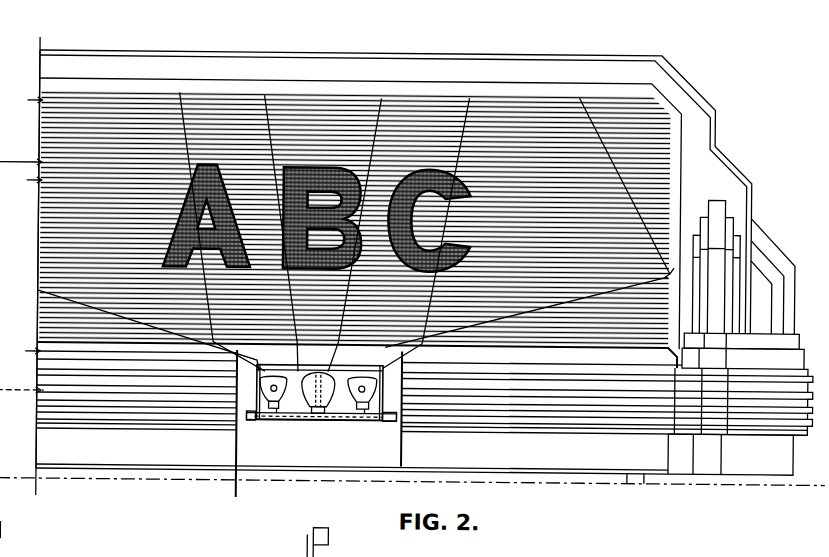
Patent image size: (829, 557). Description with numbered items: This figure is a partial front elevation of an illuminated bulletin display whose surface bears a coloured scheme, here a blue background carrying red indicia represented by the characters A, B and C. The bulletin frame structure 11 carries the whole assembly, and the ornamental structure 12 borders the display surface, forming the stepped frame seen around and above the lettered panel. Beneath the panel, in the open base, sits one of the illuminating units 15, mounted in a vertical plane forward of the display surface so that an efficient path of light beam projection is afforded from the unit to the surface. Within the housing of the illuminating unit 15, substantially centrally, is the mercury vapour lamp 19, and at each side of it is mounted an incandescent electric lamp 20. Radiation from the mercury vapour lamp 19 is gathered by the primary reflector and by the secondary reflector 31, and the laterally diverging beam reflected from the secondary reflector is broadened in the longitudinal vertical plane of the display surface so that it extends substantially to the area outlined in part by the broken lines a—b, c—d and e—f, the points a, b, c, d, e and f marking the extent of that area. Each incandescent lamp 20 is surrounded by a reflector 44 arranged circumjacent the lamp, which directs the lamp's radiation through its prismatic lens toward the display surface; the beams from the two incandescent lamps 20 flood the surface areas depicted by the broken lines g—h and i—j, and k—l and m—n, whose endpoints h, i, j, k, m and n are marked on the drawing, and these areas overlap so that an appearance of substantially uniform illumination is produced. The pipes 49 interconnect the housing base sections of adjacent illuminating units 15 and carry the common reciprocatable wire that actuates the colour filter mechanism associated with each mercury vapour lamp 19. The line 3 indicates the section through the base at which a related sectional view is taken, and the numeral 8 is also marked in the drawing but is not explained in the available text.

The section line 3- 3 is at (49, 495).
The ornamental structure 12 is at (426, 262).
The incandescent electric lamp 20 is at (406, 380).
The reflector 44 is at (383, 404).
The pipes 49 is at (430, 440).
The bulletin frame structure 11 is at (254, 420).
The illuminating unit 15 is at (298, 404).
The left lamp 8 is at (273, 375).
The broken line a—b end point a is at (283, 393).
The mercury vapour lamp 19 is at (336, 373).
The broken line m—n end point m is at (334, 389).
The secondary reflector 31 is at (330, 404).
The broken line c—d end point c is at (378, 364).
The broken line k—l end point k is at (405, 355).
The broken line g—h end point h is at (180, 91).
The broken line i—j end point i is at (265, 93).
The broken line i—j end point j is at (382, 95).
The broken line m—n end point n is at (470, 94).
The broken line e—f end point f is at (580, 93).
The broken line e—f end point e is at (673, 267).
The broken line c—d end point d is at (664, 275).
The broken line a—b end point b is at (46, 294).